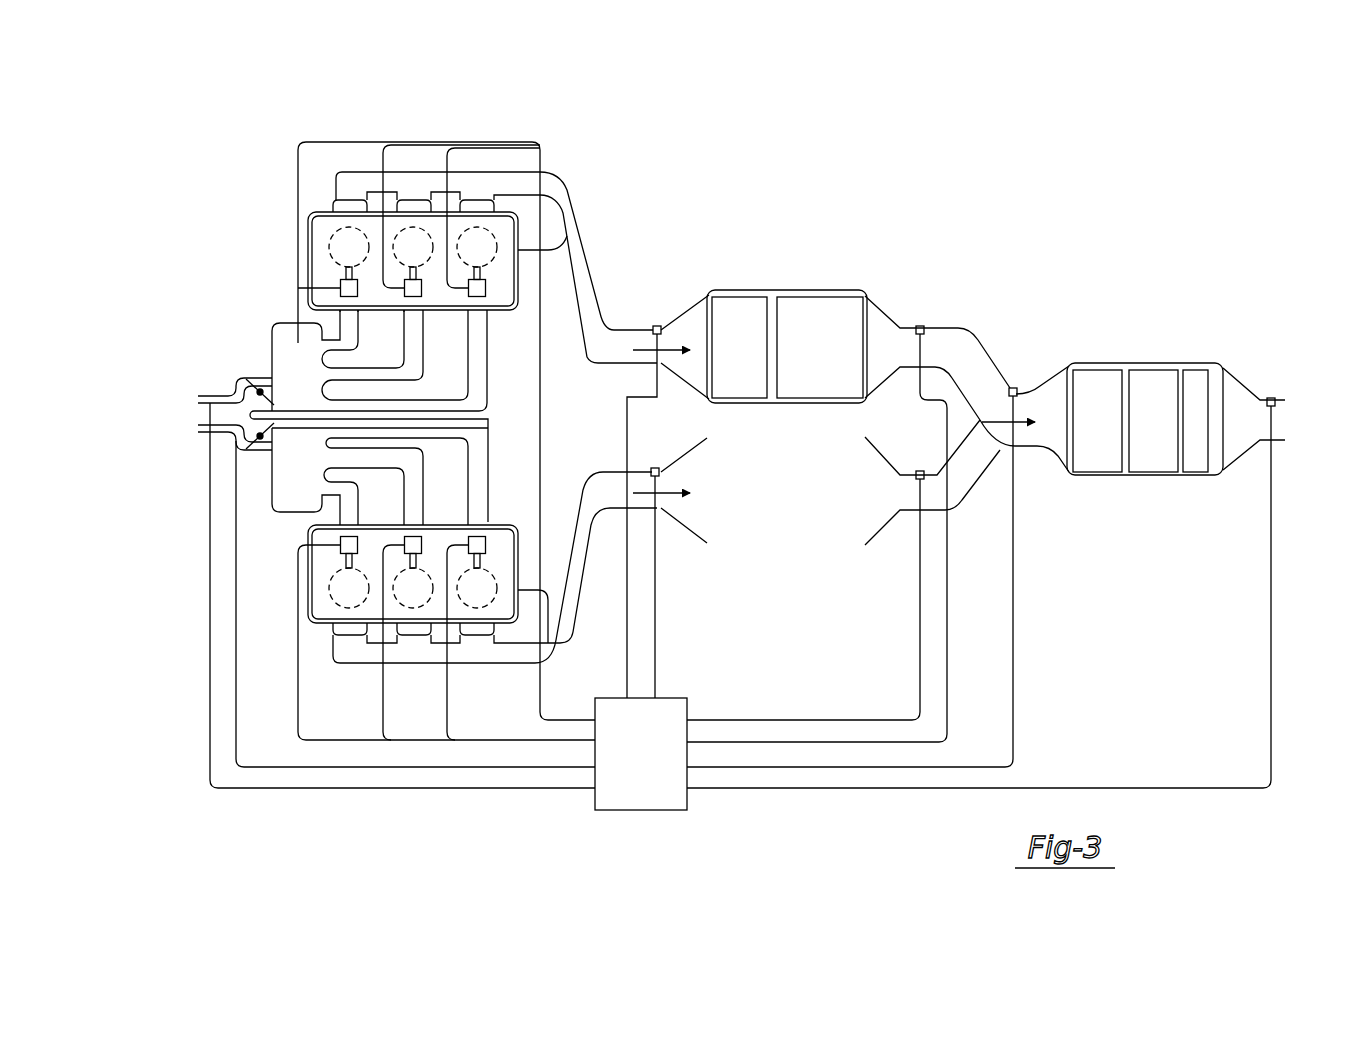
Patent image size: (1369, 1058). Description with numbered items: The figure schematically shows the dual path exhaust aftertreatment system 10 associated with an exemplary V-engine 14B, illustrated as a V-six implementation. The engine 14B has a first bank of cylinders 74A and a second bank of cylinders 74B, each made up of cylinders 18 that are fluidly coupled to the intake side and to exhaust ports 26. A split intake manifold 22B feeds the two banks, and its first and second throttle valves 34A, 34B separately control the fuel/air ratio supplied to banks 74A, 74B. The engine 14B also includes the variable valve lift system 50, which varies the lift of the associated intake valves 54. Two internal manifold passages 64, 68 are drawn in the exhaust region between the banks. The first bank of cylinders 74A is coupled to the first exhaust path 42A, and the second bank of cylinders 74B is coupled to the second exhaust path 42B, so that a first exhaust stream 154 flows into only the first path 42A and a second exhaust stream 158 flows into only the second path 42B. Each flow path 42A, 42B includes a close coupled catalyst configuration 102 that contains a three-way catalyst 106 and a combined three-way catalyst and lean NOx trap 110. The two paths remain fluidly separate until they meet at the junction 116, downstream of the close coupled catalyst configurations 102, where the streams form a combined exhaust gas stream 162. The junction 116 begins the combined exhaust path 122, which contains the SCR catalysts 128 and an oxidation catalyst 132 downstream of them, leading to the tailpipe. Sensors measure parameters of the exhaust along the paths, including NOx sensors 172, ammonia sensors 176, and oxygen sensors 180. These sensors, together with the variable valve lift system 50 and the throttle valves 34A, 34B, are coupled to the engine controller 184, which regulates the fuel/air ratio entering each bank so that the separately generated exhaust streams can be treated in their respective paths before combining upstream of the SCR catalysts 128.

The dual path exhaust aftertreatment system 10 is at (1056, 220).
The V-engine 14B is at (301, 117).
The cylinders 18 is at (458, 634).
The exhaust ports 26 is at (474, 638).
The split intake manifold 22B is at (394, 528).
The first throttle valve 34A is at (266, 378).
The second throttle valve 34B is at (266, 457).
The variable valve lift system 50 is at (490, 535).
The intake valves 54 is at (340, 568).
The first exhaust manifold passage 64 is at (369, 416).
The second exhaust manifold passage 68 is at (380, 476).
The first bank of cylinders 74A is at (572, 196).
The second bank of cylinders 74B is at (553, 668).
The first exhaust path 42A is at (812, 312).
The second exhaust path 42B is at (816, 520).
The close coupled catalyst configuration 102 is at (796, 312).
The three-way catalyst 106 is at (742, 296).
The combined TWC and lean NOx trap 110 is at (797, 296).
The first exhaust stream 154 is at (638, 348).
The second exhaust stream 158 is at (666, 510).
The combined exhaust gas stream 162 is at (966, 458).
The junction 116 is at (1020, 446).
The combined exhaust path 122 is at (1148, 383).
The SCR catalyst 128 is at (1155, 370).
The oxidation catalyst 132 is at (1202, 365).
The NOx sensor 172 is at (656, 467).
The ammonia sensor 176 is at (919, 471).
The oxygen sensor 180 is at (1272, 398).
The engine controller 184 is at (641, 812).